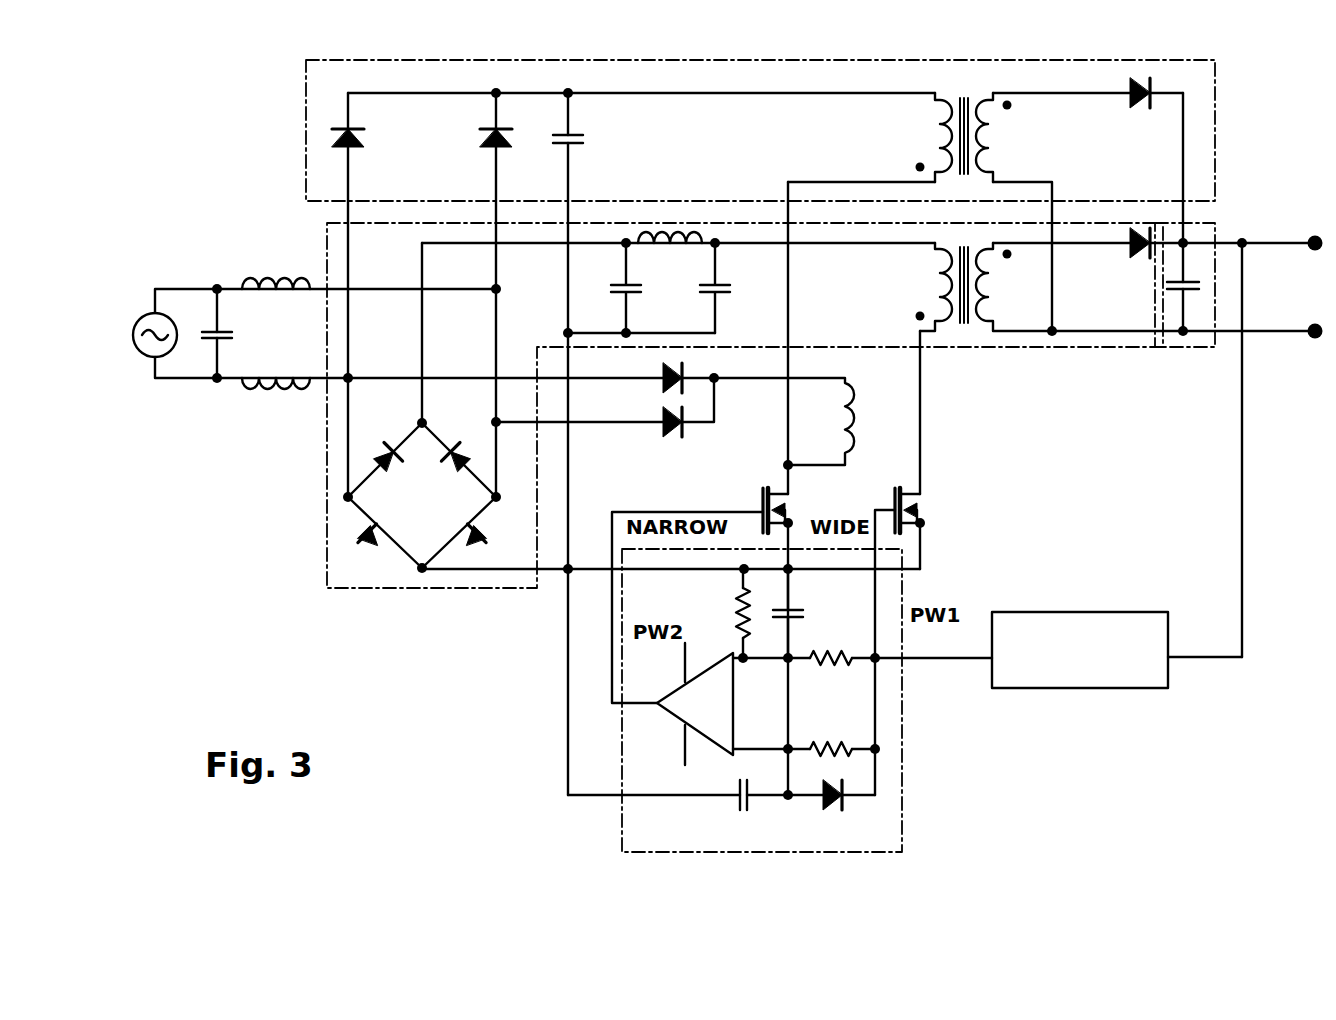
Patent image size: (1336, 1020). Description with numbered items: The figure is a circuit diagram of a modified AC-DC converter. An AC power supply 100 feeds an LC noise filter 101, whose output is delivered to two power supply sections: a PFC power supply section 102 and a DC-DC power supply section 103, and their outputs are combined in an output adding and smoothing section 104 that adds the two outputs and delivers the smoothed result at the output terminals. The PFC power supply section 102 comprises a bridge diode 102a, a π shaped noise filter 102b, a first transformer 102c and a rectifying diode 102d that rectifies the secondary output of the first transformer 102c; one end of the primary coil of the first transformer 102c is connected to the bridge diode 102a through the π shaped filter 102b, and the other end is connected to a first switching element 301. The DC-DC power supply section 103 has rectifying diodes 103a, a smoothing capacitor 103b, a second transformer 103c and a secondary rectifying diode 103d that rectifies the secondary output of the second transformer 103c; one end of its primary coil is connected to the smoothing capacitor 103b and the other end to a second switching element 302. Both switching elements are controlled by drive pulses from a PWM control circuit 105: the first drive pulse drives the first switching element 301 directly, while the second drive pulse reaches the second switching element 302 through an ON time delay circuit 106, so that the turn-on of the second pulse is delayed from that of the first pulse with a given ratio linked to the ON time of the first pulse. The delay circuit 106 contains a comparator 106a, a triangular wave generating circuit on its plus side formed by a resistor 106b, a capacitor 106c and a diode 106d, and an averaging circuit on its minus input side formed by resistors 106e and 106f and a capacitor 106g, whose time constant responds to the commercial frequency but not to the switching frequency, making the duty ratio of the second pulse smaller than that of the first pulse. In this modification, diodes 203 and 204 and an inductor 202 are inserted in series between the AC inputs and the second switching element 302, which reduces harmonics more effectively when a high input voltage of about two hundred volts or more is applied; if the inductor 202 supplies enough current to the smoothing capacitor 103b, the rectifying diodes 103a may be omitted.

The AC power supply 100 is at (155, 364).
The LC noise filter 101 is at (256, 359).
The PFC power supply section 102 is at (362, 590).
The bridge diode 102a is at (437, 495).
The π shaped noise filter 102b is at (649, 282).
The first transformer 102c is at (1116, 294).
The rectifying diode 102d is at (1201, 257).
The DC-DC power supply section 103 is at (778, 59).
The rectifying diodes 103a is at (422, 145).
The smoothing capacitor 103b is at (550, 163).
The second transformer 103c is at (1023, 145).
The secondary rectifying diode 103d is at (1135, 104).
The output adding and smoothing section 104 is at (1186, 349).
The PWM control circuit 105 is at (1067, 690).
The ON time delay circuit 106 is at (636, 854).
The comparator 106a is at (680, 702).
The resistor 106b is at (832, 732).
The capacitor 106c is at (716, 805).
The diode 106d is at (827, 810).
The resistor 106e is at (836, 644).
The resistor 106f is at (717, 613).
The capacitor 106g is at (807, 598).
The inductor 202 is at (784, 420).
The diode 203 is at (664, 389).
The diode 204 is at (648, 436).
The first switching element 301 is at (937, 506).
The second switching element 302 is at (752, 503).